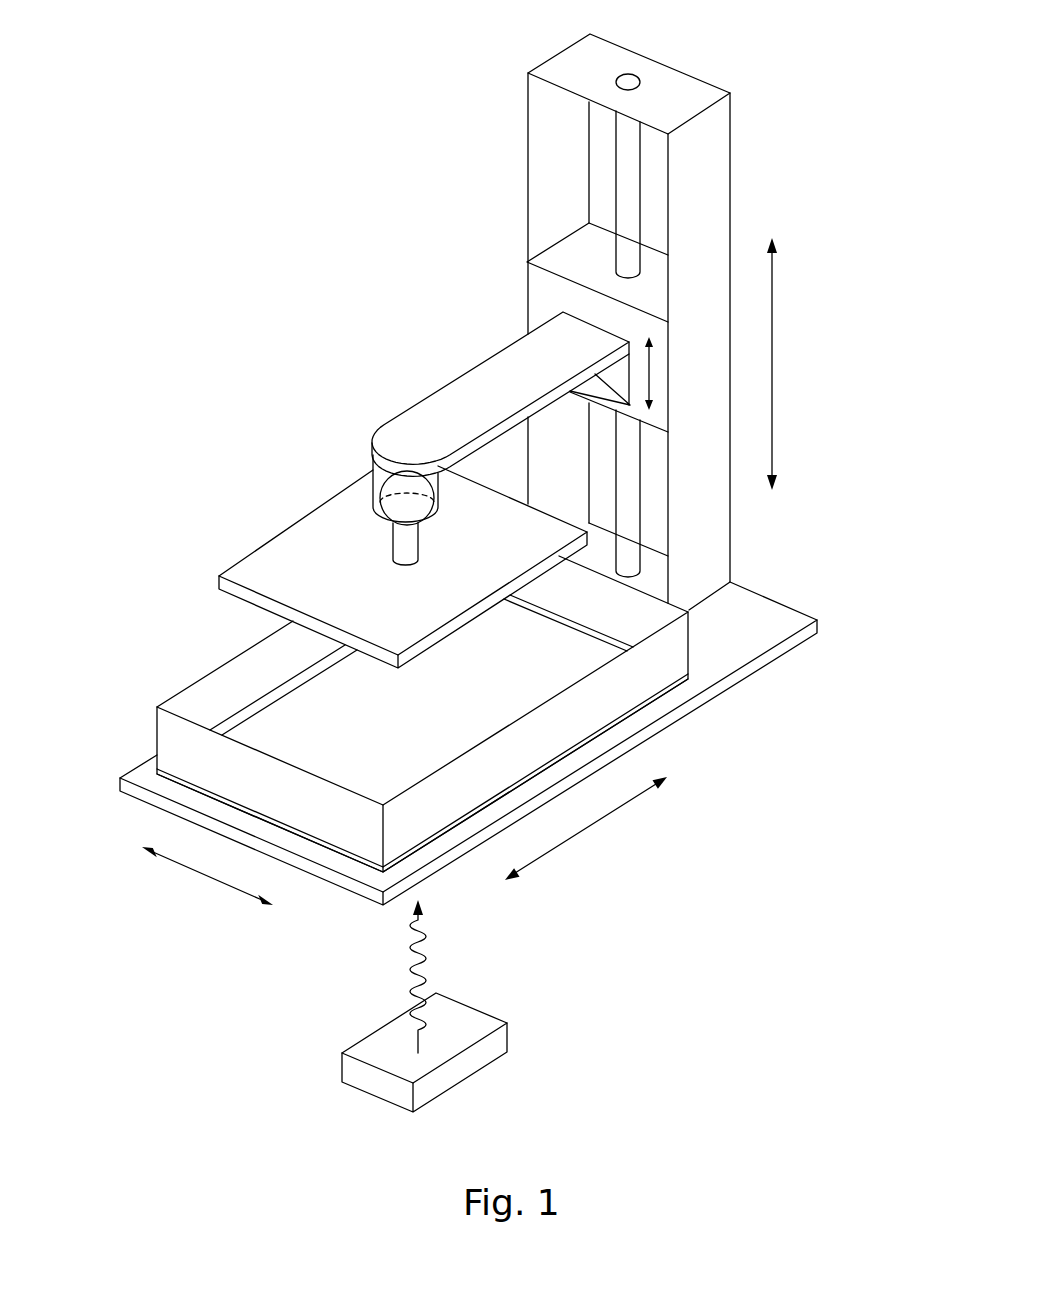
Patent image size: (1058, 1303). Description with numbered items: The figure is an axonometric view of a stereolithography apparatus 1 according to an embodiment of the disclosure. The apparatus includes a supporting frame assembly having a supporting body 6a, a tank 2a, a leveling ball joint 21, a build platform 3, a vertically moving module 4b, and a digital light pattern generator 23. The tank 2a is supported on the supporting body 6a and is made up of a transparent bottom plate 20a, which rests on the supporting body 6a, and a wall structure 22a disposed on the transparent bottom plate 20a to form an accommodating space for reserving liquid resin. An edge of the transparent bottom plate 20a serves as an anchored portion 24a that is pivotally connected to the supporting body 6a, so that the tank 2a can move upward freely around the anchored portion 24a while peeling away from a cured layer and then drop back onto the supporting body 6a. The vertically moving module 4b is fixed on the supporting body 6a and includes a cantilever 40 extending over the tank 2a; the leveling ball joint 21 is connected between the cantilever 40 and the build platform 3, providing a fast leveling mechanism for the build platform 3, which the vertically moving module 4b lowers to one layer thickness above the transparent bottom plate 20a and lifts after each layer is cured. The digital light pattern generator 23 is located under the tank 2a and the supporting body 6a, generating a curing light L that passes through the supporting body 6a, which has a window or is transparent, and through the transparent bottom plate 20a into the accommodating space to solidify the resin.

The stereolithography apparatus 1 is at (272, 257).
The vertically moving module 4b is at (524, 178).
The cantilever 40 is at (458, 403).
The leveling ball joint 21 is at (369, 472).
The build platform 3 is at (297, 523).
The tank 2a is at (788, 718).
The wall structure 22a is at (650, 663).
The transparent bottom plate 20a is at (652, 703).
The anchored portion 24a is at (172, 784).
The supporting body 6a is at (763, 618).
The digital light pattern generator 23 is at (350, 1070).
The curing light L is at (413, 978).